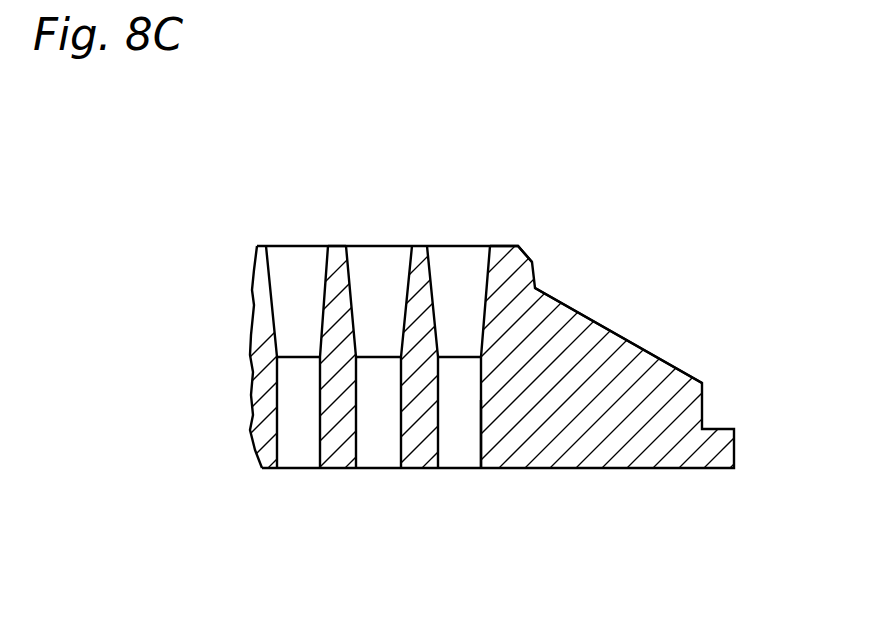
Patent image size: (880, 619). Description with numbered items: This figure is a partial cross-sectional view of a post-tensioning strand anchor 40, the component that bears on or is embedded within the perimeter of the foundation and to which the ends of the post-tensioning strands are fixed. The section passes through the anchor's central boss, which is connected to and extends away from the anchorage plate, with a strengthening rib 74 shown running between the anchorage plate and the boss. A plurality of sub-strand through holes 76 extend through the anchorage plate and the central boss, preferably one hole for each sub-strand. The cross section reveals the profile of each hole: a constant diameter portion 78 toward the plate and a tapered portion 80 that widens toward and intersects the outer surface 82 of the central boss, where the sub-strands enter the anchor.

The post-tensioning strand anchor 40 is at (624, 212).
The strengthening rib 74 is at (618, 333).
The sub-strand through hole 76 is at (295, 264).
The constant diameter portion 78 is at (478, 430).
The tapered portion 80 is at (487, 276).
The outer surface 82 is at (338, 247).